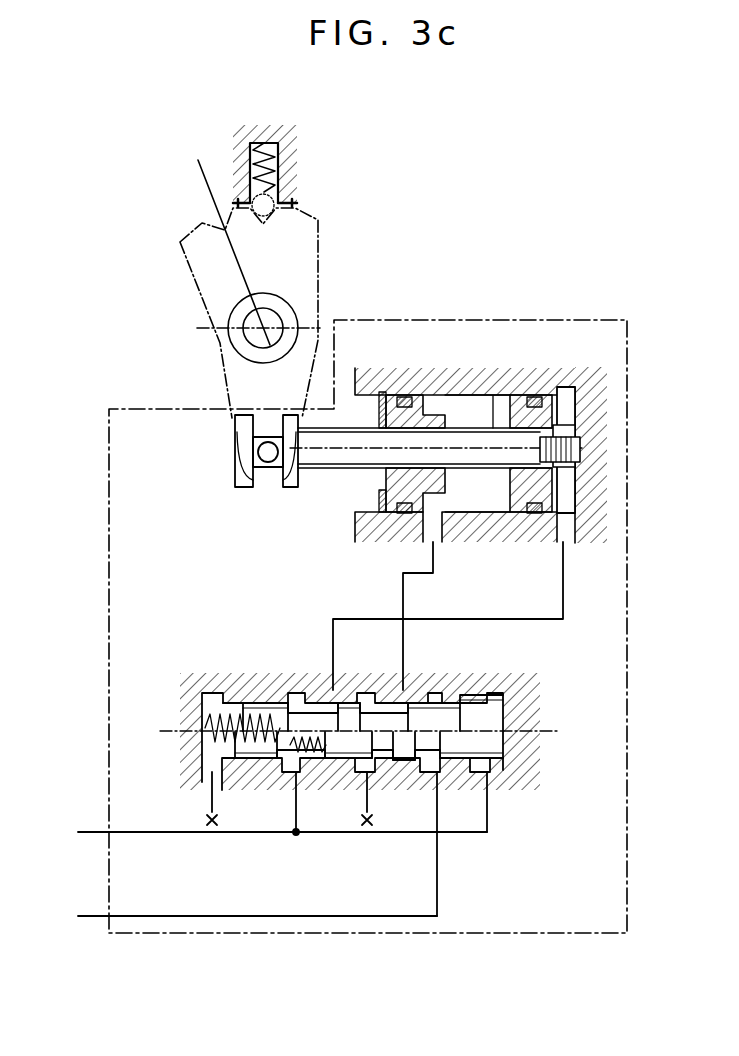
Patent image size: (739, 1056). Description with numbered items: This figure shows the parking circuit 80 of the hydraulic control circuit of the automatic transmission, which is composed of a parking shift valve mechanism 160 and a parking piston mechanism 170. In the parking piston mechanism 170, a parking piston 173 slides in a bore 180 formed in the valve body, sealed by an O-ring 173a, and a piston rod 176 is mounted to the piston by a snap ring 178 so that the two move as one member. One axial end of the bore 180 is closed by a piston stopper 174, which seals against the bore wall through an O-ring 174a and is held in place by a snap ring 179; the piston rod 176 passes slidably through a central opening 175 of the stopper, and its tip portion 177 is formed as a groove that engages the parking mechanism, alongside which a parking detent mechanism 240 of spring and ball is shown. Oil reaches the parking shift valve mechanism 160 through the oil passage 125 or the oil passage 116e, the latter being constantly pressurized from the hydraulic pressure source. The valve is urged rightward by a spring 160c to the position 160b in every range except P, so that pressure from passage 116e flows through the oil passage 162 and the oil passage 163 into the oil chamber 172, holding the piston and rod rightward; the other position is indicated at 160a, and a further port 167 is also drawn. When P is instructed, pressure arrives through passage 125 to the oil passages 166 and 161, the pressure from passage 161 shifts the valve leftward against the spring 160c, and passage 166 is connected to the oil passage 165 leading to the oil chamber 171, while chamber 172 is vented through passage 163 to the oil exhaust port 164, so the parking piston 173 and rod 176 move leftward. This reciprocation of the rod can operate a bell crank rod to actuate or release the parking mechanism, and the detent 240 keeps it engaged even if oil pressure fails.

The parking circuit 80 is at (497, 937).
The parking detent mechanism 240 is at (322, 258).
The tip portion 177 is at (278, 475).
The parking piston mechanism 170 is at (496, 546).
The oil chamber 171 is at (568, 400).
The oil chamber 172 is at (495, 400).
The piston rod 176 is at (327, 470).
The snap ring 178 is at (562, 432).
The bore 180 is at (467, 394).
The central opening 175 is at (398, 420).
The snap ring 179 is at (382, 395).
The piston stopper 174 is at (405, 397).
The O-ring 174a is at (404, 514).
The parking piston 173 is at (533, 397).
The O-ring 173a is at (535, 514).
The oil passage 163 is at (434, 557).
The oil passage 165 is at (564, 592).
The parking shift valve mechanism 160 is at (258, 681).
The parking shift valve position 160a is at (470, 722).
The parking shift valve position 160b is at (500, 745).
The spring 160c is at (210, 748).
The oil passage 167 is at (214, 800).
The oil passage 166 is at (298, 800).
The oil exhaust port 164 is at (369, 800).
The oil passage 162 is at (439, 800).
The oil passage 161 is at (489, 800).
The oil passage 125 is at (88, 832).
The oil passage 116e is at (92, 916).